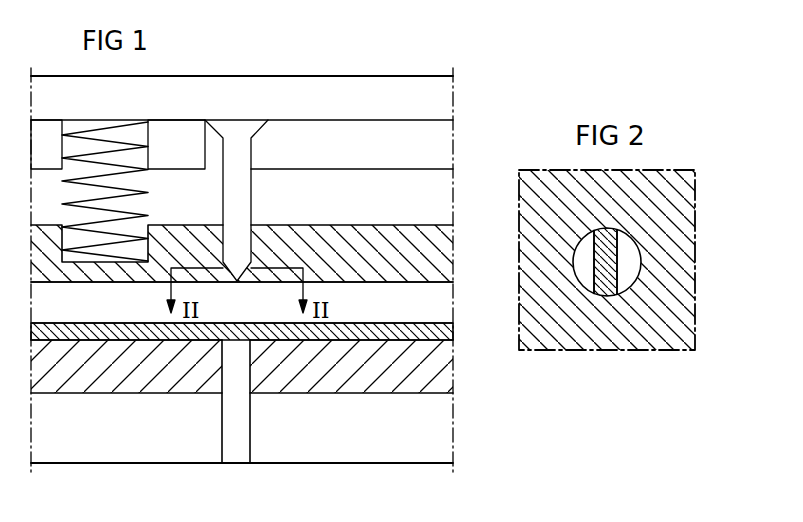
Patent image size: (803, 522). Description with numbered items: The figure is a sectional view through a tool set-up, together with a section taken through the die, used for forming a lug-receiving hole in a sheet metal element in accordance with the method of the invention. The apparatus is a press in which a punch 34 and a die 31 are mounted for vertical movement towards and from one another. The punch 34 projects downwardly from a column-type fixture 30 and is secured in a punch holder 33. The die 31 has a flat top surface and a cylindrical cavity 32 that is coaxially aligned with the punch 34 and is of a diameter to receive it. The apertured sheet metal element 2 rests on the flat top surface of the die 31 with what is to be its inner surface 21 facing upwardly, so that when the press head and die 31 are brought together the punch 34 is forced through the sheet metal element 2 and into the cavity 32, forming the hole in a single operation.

In FIG. 1, the column-type fixture 30 is at (314, 68).
In FIG. 1, the punch holder 33 is at (370, 142).
In FIG. 1, the punch 34 is at (244, 204).
In FIG. 2, the punch 34 is at (611, 252).
In FIG. 1, the apertured sheet metal element 2 is at (119, 331).
In FIG. 1, the inner surface 21 is at (341, 330).
In FIG. 1, the die 31 is at (430, 372).
In FIG. 1, the cylindrical cavity 32 is at (236, 426).
In FIG. 2, the cylindrical cavity 32 is at (631, 262).